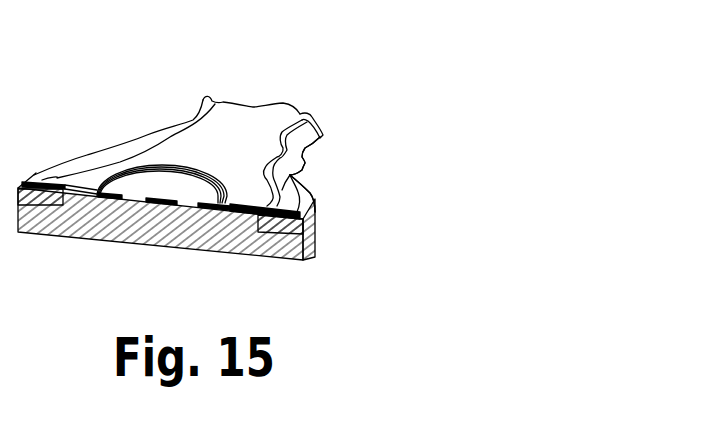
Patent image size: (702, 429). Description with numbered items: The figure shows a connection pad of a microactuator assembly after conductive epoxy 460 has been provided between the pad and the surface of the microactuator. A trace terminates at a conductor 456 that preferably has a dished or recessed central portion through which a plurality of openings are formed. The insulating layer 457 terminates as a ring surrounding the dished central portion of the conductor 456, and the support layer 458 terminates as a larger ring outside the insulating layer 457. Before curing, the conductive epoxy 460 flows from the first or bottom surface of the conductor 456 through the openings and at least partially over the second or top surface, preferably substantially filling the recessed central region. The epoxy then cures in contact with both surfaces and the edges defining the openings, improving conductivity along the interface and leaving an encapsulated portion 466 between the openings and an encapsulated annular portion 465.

The conductor 456 is at (202, 142).
The insulating layer 457 is at (290, 175).
The support layer 458 is at (313, 199).
The conductive epoxy 460 is at (163, 181).
The encapsulated annular portion 465 is at (105, 200).
The encapsulated portion 466 is at (161, 205).